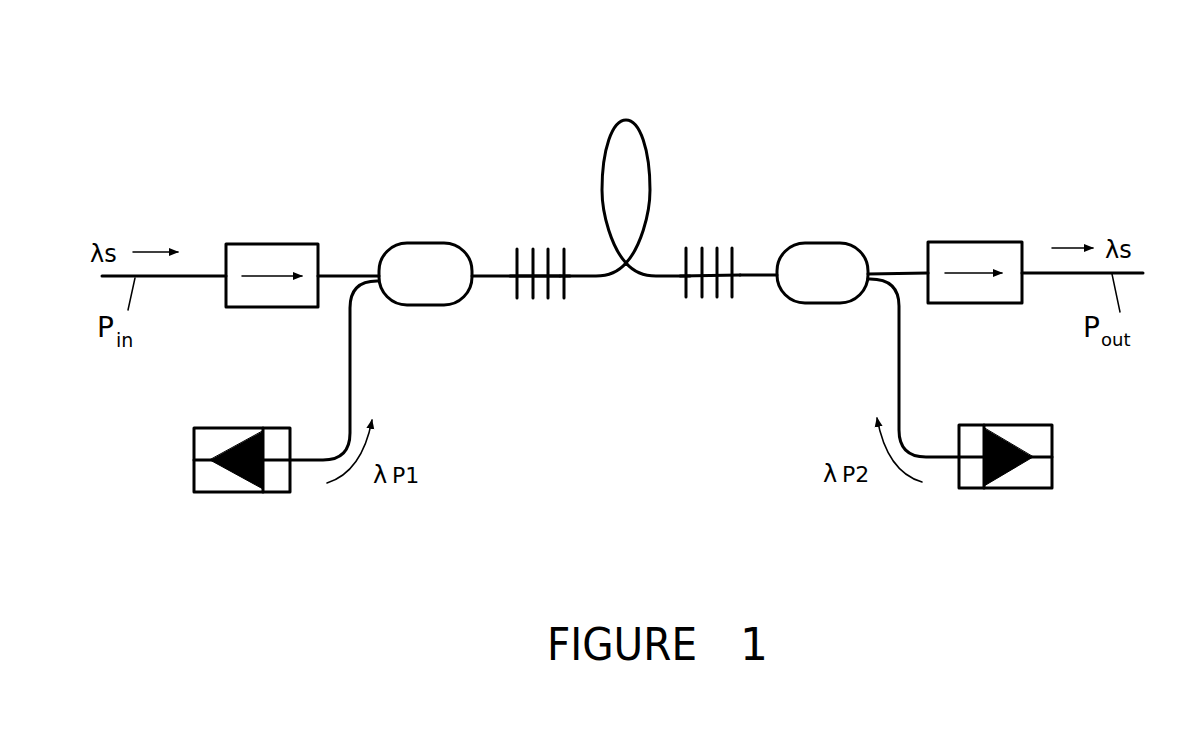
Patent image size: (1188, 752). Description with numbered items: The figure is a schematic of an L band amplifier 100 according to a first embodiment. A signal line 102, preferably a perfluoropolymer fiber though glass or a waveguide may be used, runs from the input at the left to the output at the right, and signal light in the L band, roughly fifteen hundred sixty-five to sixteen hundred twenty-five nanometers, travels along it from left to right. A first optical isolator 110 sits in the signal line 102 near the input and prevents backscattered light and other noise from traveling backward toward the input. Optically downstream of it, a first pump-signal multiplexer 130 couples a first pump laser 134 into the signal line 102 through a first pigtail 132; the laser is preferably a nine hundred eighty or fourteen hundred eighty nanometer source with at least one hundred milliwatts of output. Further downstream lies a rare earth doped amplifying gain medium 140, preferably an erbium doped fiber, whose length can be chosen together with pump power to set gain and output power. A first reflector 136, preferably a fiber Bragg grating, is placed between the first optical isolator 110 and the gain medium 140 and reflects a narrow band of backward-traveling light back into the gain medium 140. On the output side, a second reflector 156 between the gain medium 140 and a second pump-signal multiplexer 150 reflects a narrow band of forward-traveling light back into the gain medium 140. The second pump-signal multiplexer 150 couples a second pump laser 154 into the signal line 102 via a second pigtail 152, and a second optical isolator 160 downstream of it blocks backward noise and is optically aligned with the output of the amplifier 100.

The L band amplifier 100 is at (541, 112).
The signal line 102 is at (197, 277).
The first optical isolator 110 is at (257, 243).
The first pump-signal multiplexer 130 is at (410, 244).
The first pigtail 132 is at (352, 352).
The first pump laser 134 is at (225, 494).
The first reflector 136 is at (557, 300).
The rare earth doped amplifying gain medium 140 is at (648, 152).
The second pump-signal multiplexer 150 is at (838, 242).
The second pigtail 152 is at (897, 350).
The second pump laser 154 is at (1018, 490).
The second reflector 156 is at (696, 299).
The second optical isolator 160 is at (992, 241).